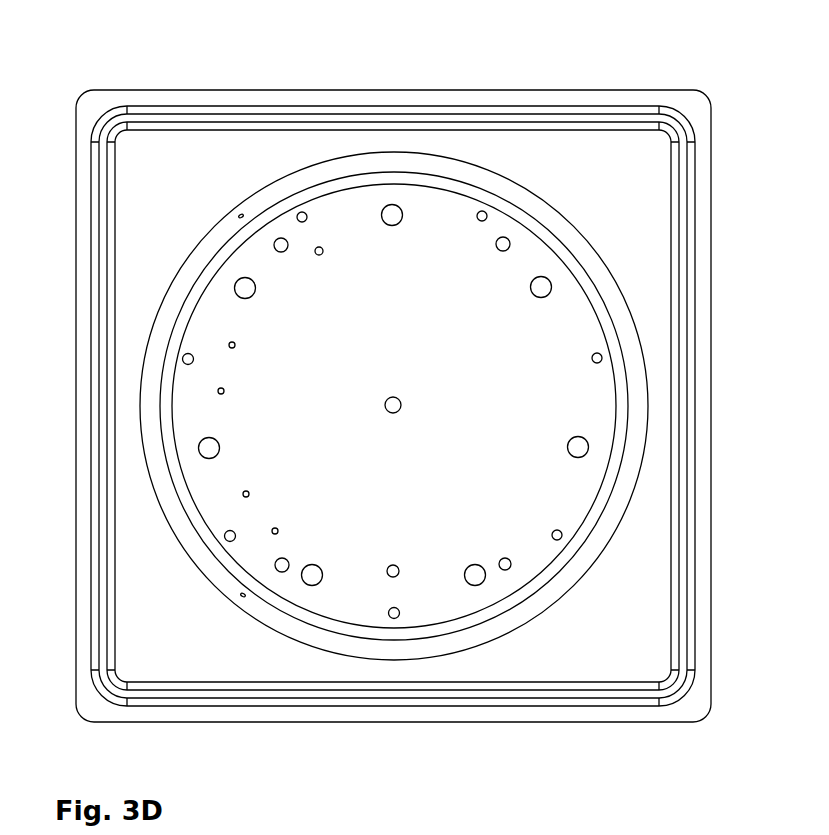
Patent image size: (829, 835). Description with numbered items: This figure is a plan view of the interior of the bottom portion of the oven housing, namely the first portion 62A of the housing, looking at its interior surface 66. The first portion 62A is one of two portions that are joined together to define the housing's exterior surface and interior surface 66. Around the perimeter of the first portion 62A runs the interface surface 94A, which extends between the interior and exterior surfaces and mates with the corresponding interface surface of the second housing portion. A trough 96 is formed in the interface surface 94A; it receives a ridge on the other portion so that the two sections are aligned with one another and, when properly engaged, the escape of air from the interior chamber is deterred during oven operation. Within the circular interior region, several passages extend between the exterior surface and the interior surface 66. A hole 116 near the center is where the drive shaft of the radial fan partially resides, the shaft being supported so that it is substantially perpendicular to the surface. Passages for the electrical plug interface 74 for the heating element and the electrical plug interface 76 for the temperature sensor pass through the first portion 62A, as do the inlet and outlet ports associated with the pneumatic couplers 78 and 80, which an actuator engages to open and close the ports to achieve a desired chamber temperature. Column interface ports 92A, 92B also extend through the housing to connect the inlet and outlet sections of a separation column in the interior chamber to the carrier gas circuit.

The first portion of the housing 62A is at (712, 438).
The interface surface 94A is at (687, 103).
The trough 96 is at (682, 243).
The interior surface 66 is at (408, 325).
The pneumatic coupler 80 is at (330, 246).
The column interface port 92A is at (241, 212).
The column interface port 92B is at (244, 596).
The electrical plug interface 76 is at (222, 357).
The electrical plug interface 74 is at (250, 512).
The pneumatic coupler 78 is at (403, 571).
The hole 116 is at (393, 405).